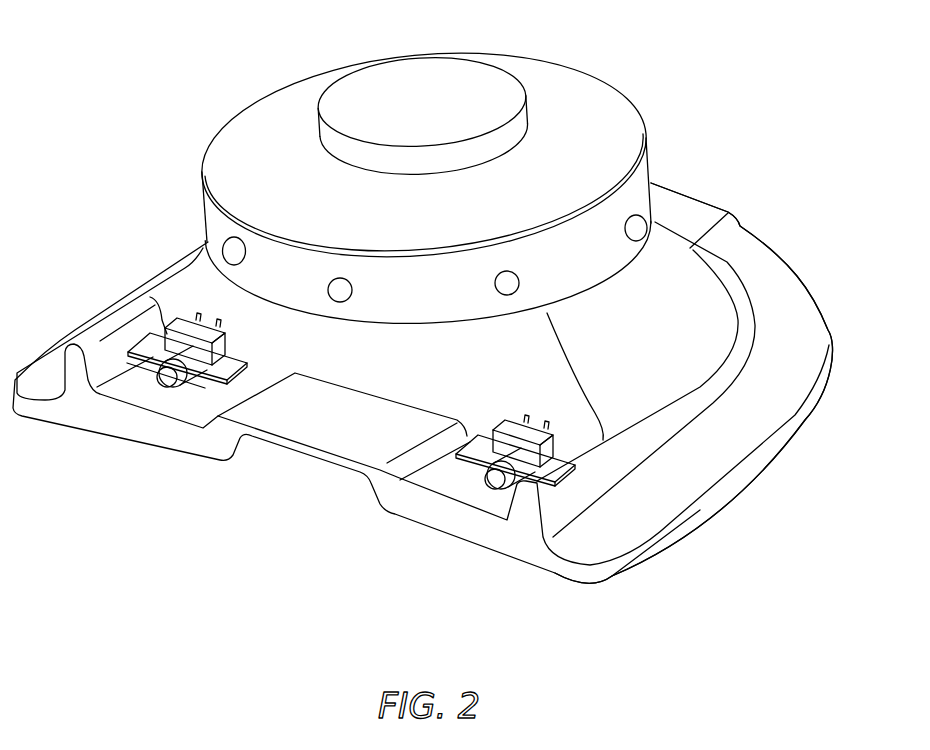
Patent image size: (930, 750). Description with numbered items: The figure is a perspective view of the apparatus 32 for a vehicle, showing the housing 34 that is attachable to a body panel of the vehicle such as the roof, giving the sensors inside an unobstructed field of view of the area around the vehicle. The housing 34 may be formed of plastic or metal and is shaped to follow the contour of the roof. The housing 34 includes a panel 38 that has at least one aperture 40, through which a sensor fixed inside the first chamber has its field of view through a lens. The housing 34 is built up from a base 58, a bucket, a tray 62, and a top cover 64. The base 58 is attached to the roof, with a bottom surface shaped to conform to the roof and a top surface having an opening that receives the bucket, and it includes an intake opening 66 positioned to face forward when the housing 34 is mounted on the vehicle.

The apparatus 32 is at (140, 88).
The housing 34 is at (720, 512).
The panel 38 is at (575, 273).
The aperture 40 is at (624, 232).
The base 58 is at (655, 553).
The tray 62 is at (405, 328).
The top cover 64 is at (590, 78).
The intake opening 66 is at (296, 474).